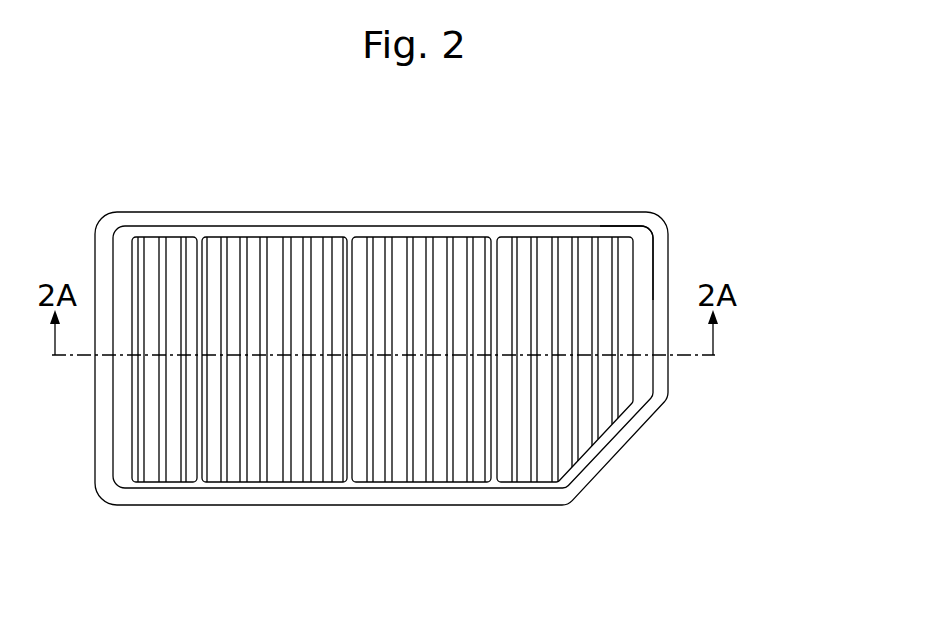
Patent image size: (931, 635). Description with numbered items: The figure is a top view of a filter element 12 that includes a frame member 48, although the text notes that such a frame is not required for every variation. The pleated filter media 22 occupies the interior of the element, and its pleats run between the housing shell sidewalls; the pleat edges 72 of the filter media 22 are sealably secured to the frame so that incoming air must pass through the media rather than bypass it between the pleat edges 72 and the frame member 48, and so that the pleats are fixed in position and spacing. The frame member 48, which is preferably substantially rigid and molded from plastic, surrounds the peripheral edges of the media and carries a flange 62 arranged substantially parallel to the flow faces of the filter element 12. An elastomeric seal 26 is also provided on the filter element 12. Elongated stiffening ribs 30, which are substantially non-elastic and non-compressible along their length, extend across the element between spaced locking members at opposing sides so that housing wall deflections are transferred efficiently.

The filter element 12 is at (743, 178).
The pleated filter media 22 is at (445, 290).
The elastomeric seal 26 is at (670, 236).
The stiffening rib 30 is at (200, 435).
The frame member 48 is at (642, 243).
The flange 62 is at (420, 484).
The pleat edges 72 is at (180, 246).